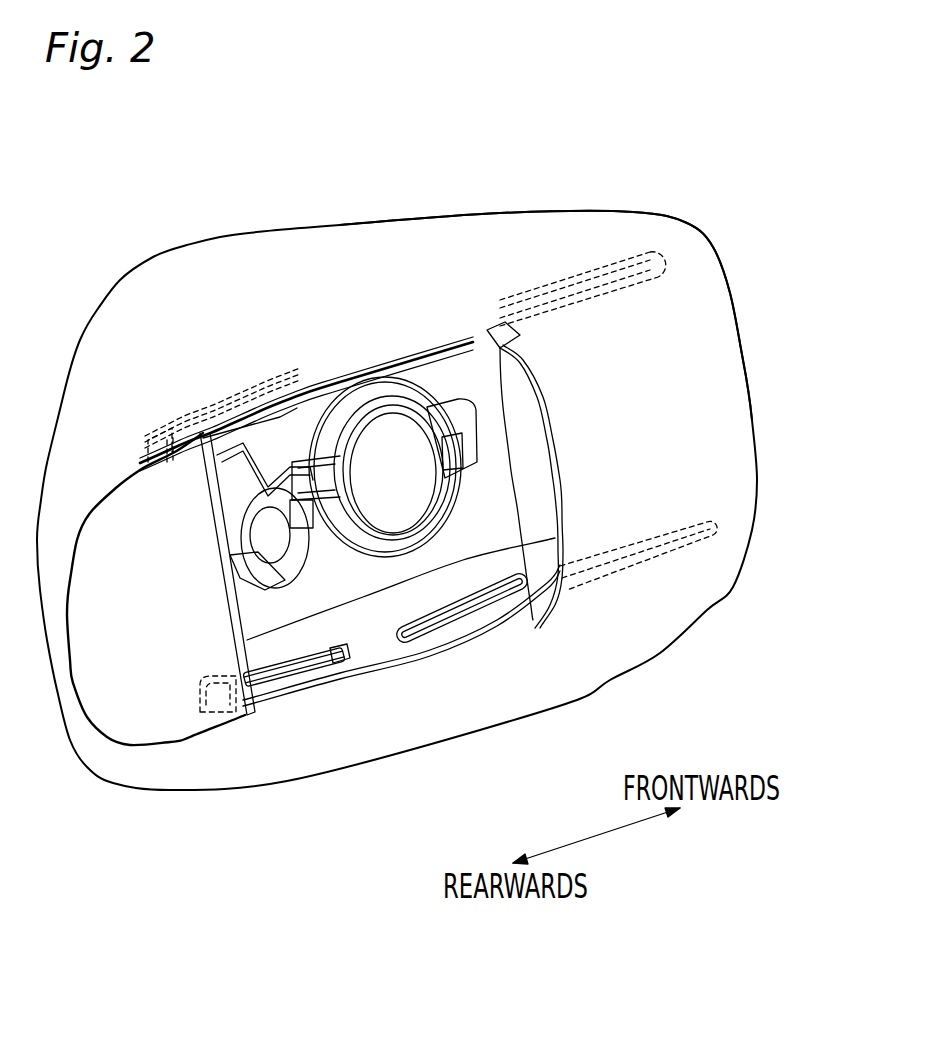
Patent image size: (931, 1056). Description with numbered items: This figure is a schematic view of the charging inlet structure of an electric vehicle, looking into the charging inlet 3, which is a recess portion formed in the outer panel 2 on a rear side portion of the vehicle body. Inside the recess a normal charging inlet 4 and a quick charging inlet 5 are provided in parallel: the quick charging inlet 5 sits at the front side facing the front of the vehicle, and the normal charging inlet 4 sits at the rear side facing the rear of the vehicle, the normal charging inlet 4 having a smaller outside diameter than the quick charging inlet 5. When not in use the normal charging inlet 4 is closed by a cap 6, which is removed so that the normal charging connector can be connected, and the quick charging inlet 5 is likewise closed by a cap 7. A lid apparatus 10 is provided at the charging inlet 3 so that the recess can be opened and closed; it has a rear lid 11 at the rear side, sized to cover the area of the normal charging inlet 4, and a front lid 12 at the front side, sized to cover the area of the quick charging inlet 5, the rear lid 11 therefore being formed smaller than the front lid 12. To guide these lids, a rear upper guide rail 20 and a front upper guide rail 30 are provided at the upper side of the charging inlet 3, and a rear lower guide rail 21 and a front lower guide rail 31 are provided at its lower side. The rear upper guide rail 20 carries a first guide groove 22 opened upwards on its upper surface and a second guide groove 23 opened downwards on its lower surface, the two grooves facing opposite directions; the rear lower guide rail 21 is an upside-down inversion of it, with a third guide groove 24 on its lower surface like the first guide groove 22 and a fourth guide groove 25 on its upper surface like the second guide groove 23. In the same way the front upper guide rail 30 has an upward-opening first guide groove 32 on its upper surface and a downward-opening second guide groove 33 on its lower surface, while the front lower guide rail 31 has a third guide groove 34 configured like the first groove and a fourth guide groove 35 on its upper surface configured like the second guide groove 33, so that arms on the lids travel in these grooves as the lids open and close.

The outer panel 2 is at (543, 260).
The charging inlet 3 is at (377, 647).
The normal charging inlet 4 is at (227, 500).
The quick charging inlet 5 is at (360, 545).
The cap 6 is at (270, 545).
The cap 7 is at (403, 485).
The lid apparatus 10 is at (420, 288).
The rear lid 11 is at (140, 717).
The front lid 12 is at (537, 500).
The rear upper guide rail 20 is at (263, 407).
The rear lower guide rail 21 is at (340, 665).
The first guide groove 22 is at (167, 420).
The second guide groove 23 is at (273, 405).
The third guide groove 24 is at (233, 727).
The fourth guide groove 25 is at (320, 655).
The front upper guide rail 30 is at (427, 395).
The front lower guide rail 31 is at (487, 580).
The first guide groove 32 is at (513, 337).
The second guide groove 33 is at (338, 390).
The third guide groove 34 is at (560, 605).
The fourth guide groove 35 is at (412, 603).